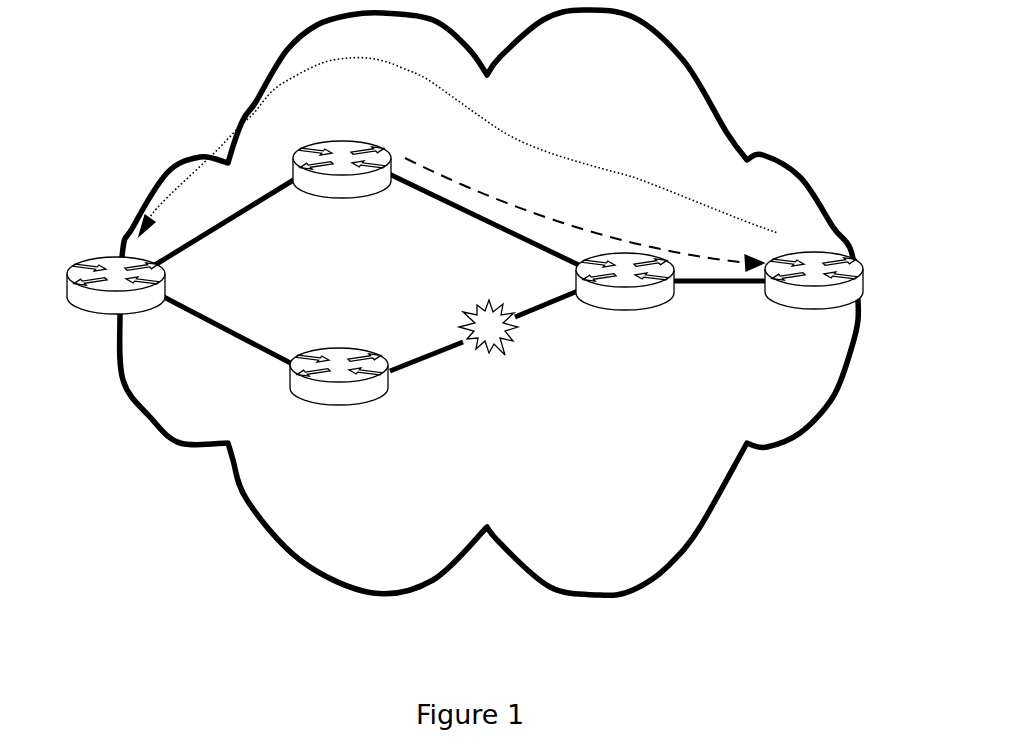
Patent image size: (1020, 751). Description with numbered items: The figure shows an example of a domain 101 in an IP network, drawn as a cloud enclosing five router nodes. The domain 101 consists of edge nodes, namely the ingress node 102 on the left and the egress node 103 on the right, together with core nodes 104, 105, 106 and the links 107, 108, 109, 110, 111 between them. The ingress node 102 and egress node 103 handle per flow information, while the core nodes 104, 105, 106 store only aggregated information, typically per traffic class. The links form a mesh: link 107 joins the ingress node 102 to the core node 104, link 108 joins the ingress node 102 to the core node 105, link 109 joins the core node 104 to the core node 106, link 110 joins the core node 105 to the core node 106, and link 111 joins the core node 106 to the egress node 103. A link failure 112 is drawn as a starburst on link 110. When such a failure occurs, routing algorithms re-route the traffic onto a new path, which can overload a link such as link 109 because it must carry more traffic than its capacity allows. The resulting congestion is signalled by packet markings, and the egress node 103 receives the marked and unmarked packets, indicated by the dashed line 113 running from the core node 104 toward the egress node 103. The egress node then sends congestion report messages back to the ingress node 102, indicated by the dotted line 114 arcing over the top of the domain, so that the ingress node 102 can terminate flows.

The domain 101 is at (667, 552).
The ingress node 102 is at (137, 313).
The egress node 103 is at (817, 305).
The core node 104 is at (343, 197).
The core node 105 is at (347, 403).
The core node 106 is at (635, 315).
The link 107 is at (207, 230).
The link 108 is at (233, 330).
The link 109 is at (497, 223).
The link 110 is at (437, 345).
The link 111 is at (738, 285).
The link failure 112 is at (493, 347).
The dashed line 113 is at (552, 213).
The dotted line 114 is at (533, 142).